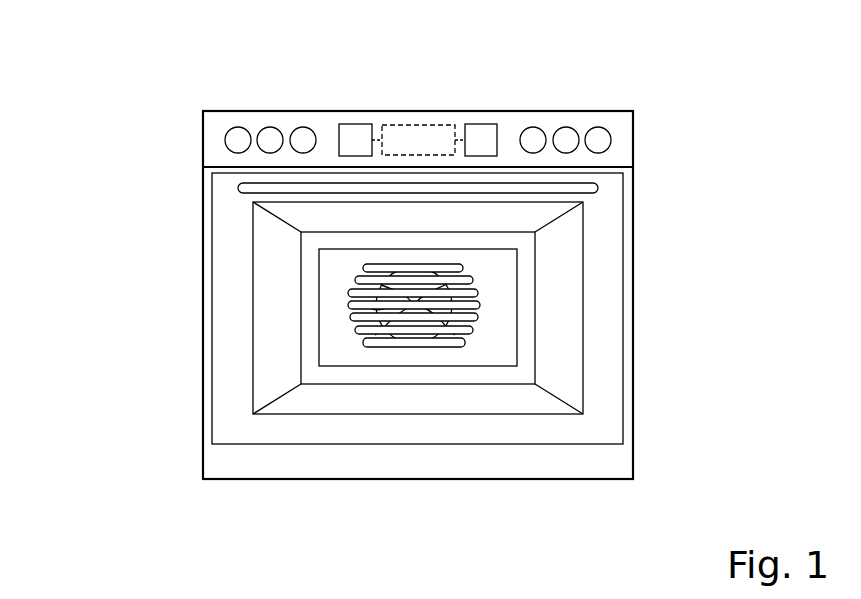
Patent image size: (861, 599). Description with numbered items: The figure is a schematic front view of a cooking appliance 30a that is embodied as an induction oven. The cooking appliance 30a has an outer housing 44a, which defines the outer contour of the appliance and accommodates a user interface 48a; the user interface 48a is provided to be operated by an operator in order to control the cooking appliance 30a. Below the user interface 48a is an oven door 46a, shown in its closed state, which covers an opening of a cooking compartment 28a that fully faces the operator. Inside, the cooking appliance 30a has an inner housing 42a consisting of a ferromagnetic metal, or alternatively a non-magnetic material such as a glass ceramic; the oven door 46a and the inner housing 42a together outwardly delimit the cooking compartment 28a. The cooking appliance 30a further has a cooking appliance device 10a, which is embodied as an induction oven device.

The cooking appliance device 10a is at (140, 127).
The cooking appliance 30a is at (136, 90).
The user interface 48a is at (511, 111).
The outer housing 44a is at (203, 460).
The oven door 46a is at (227, 192).
The inner housing 42a is at (505, 397).
The cooking compartment 28a is at (341, 348).